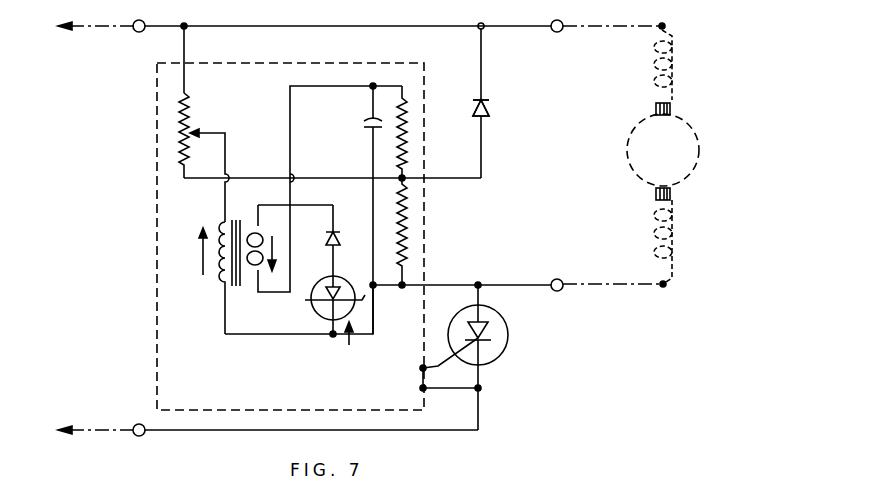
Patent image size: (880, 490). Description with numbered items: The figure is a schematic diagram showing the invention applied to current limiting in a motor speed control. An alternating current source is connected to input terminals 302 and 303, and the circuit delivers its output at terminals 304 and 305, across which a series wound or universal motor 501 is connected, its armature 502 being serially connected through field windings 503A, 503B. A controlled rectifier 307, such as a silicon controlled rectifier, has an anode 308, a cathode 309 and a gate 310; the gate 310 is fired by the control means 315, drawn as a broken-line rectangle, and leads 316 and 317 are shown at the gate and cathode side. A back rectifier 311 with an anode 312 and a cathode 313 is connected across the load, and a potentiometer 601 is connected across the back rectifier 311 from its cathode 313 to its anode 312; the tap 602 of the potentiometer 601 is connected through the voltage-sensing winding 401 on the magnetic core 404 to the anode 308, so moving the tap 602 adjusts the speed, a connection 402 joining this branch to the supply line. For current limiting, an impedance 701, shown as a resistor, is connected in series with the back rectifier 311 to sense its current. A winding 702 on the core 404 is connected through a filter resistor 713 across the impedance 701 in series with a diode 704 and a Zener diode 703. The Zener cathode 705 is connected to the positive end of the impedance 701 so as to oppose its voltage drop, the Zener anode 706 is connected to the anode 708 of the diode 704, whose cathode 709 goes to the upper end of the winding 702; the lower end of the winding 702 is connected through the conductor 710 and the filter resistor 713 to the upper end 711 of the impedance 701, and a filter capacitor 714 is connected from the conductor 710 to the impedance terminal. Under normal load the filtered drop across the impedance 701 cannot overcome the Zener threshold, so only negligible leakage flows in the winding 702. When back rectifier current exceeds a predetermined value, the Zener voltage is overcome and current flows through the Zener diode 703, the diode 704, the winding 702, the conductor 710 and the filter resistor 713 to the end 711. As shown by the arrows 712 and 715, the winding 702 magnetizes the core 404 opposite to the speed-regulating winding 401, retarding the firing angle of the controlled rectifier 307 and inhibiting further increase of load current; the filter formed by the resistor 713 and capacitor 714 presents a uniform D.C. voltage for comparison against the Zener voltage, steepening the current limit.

The input terminal 302 is at (136, 32).
The input terminal 303 is at (136, 424).
The output terminal 304 is at (562, 22).
The output terminal 305 is at (560, 291).
The controlled rectifier 307 is at (514, 340).
The anode 308 is at (489, 324).
The cathode 309 is at (490, 346).
The gate 310 is at (453, 350).
The back rectifier 311 is at (494, 111).
The anode 312 is at (487, 118).
The cathode 313 is at (487, 100).
The control means 315 is at (250, 94).
The gate lead 316 is at (423, 370).
The cathode lead 317 is at (444, 390).
The voltage-sensing winding 401 is at (216, 280).
The supply lead 402 is at (186, 28).
The magnetic core 404 is at (240, 220).
The motor 501 is at (703, 166).
The armature 502 is at (680, 120).
The field winding 503A is at (672, 72).
The field winding 503B is at (672, 247).
The potentiometer 601 is at (190, 104).
The tap 602 is at (225, 133).
The impedance 701 is at (407, 212).
The winding 702 is at (257, 292).
The Zener diode 703 is at (385, 361).
The diode 704 is at (346, 240).
The cathode 705 is at (305, 300).
The Zener anode 706 is at (337, 289).
The anode 708 is at (330, 246).
The cathode 709 is at (336, 226).
The conductor 710 is at (338, 87).
The upper end 711 is at (404, 180).
The arrow 712 is at (272, 236).
The filter resistor 713 is at (405, 134).
The filter capacitor 714 is at (368, 128).
The arrow 715 is at (203, 262).